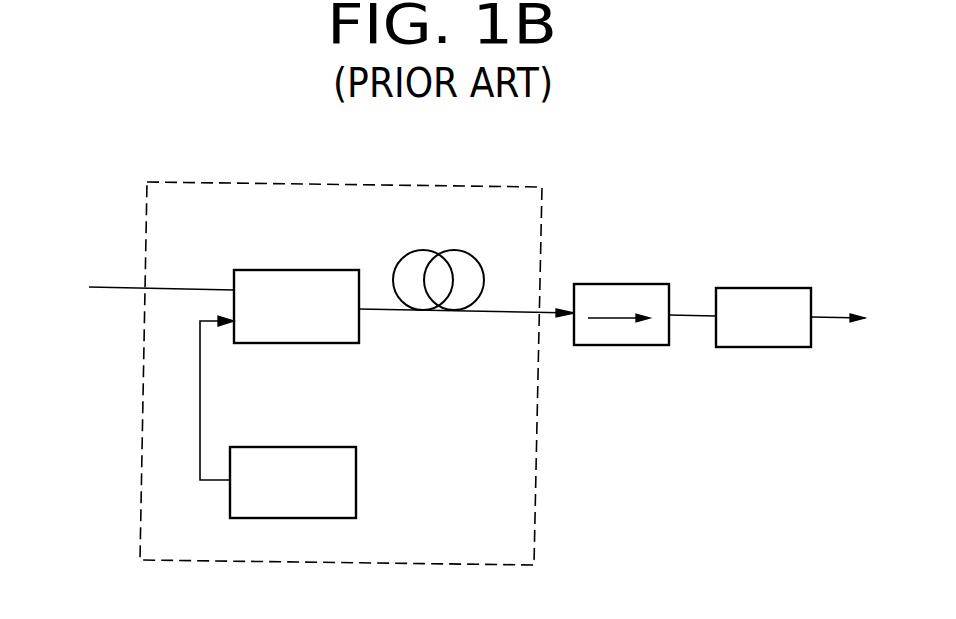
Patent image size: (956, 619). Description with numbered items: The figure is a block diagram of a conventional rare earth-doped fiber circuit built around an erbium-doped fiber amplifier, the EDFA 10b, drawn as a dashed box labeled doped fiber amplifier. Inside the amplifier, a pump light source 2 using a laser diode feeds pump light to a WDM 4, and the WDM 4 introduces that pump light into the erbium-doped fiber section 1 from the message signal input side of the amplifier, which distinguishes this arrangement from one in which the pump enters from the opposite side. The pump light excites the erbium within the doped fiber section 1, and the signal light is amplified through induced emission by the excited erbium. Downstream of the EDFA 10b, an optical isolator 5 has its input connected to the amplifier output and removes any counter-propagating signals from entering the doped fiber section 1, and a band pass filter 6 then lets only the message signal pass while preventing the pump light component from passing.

The doped fiber section 1 is at (470, 257).
The pump light source 2 is at (356, 470).
The WDM 4 is at (288, 270).
The optical isolator 5 is at (612, 284).
The band pass filter 6 is at (750, 288).
The EDFA 10b is at (535, 506).